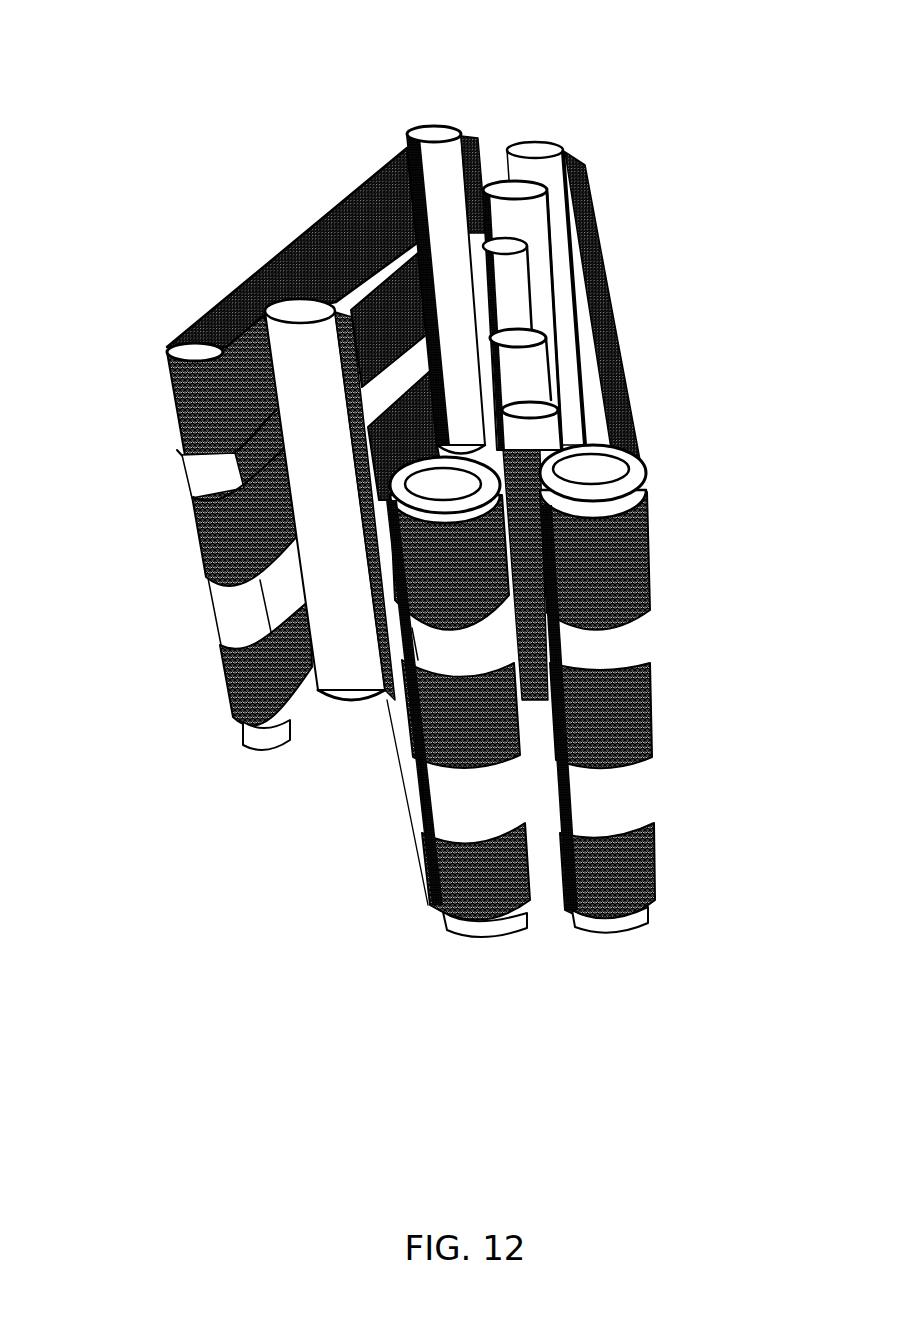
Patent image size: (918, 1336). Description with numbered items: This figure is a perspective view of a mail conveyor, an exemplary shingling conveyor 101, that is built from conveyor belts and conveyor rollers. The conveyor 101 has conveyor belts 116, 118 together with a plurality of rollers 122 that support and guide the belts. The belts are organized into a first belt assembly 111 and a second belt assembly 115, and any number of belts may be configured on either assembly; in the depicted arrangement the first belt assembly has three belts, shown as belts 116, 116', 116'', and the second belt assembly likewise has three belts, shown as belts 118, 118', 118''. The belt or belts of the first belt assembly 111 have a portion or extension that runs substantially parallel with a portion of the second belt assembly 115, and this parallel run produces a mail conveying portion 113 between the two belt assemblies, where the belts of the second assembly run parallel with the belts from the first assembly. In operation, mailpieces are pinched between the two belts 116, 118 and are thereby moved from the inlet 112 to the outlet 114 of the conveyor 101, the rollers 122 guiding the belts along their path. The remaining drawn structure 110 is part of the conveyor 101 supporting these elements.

The conveyor 101 is at (352, 134).
The outer tube 110 is at (573, 180).
The first belt assembly 111 is at (228, 300).
The inlet 112 is at (535, 905).
The mail conveying portion 113 is at (488, 300).
The outlet 114 is at (486, 160).
The second belt assembly 115 is at (650, 538).
The conveyor belt 116 is at (196, 675).
The middle sleeve segment 116' is at (172, 547).
The upper sleeve segment 116'' is at (165, 451).
The conveyor belt 118 is at (662, 860).
The middle sleeve segment 118' is at (670, 715).
The plate edge 118'' is at (660, 306).
The rollers 122 is at (632, 633).